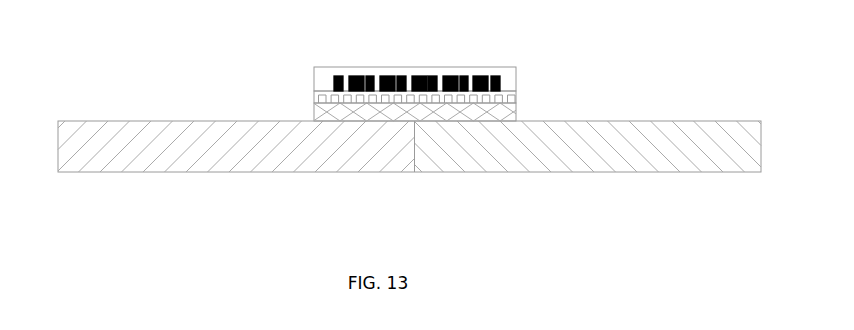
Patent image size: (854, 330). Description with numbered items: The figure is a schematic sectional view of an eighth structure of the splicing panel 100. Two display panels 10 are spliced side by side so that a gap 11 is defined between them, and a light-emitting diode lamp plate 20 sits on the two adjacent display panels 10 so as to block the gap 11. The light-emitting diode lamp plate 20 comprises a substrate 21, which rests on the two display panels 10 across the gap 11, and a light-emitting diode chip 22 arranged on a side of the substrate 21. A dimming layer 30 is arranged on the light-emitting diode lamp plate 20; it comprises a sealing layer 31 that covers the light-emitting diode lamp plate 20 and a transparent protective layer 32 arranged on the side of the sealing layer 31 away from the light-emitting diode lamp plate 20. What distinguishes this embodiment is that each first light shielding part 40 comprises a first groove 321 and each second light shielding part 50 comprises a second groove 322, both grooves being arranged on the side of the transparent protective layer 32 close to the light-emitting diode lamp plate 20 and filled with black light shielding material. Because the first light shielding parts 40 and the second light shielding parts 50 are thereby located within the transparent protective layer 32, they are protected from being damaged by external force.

The splicing panel 100 is at (171, 88).
The display panel 10 is at (83, 137).
The gap 11 is at (415, 182).
The light-emitting diode lamp plate 20 is at (313, 108).
The substrate 21 is at (508, 115).
The light-emitting diode chip 22 is at (447, 95).
The dimming layer 30 is at (515, 67).
The sealing layer 31 is at (415, 95).
The transparent protective layer 32 is at (475, 73).
The first groove 321 is at (335, 85).
The second groove 322 is at (397, 87).
The first light shielding part 40 is at (338, 76).
The second light shielding part 50 is at (355, 76).